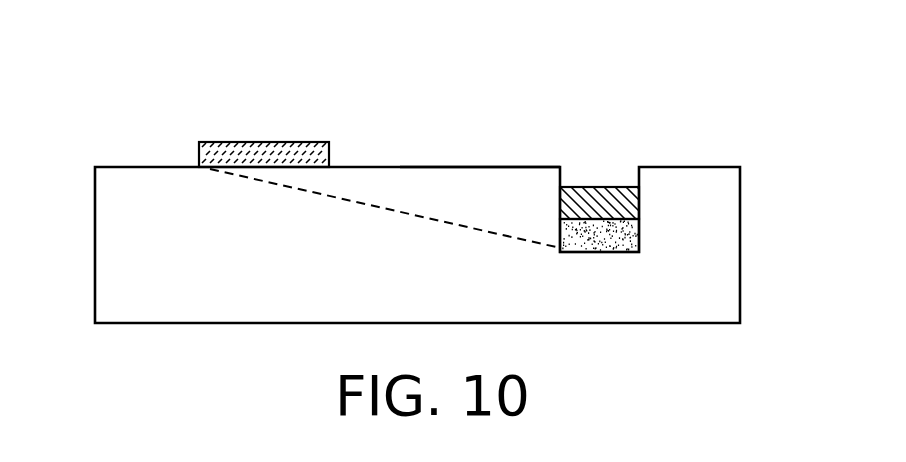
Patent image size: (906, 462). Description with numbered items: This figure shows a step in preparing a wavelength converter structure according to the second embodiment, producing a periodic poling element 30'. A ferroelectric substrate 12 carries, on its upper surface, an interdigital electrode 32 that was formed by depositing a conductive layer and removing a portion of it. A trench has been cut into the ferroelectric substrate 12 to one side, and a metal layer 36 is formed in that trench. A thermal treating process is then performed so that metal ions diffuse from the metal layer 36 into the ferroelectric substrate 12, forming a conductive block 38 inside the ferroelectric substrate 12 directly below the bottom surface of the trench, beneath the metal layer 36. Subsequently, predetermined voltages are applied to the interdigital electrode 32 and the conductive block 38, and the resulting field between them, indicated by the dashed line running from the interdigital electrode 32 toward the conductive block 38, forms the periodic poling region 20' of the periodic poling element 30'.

The periodic poling element 30' is at (84, 72).
The ferroelectric substrate 12 is at (453, 298).
The periodic poling region 20' is at (480, 146).
The interdigital electrode 32 is at (265, 142).
The metal layer 36 is at (603, 200).
The conductive block 38 is at (598, 235).